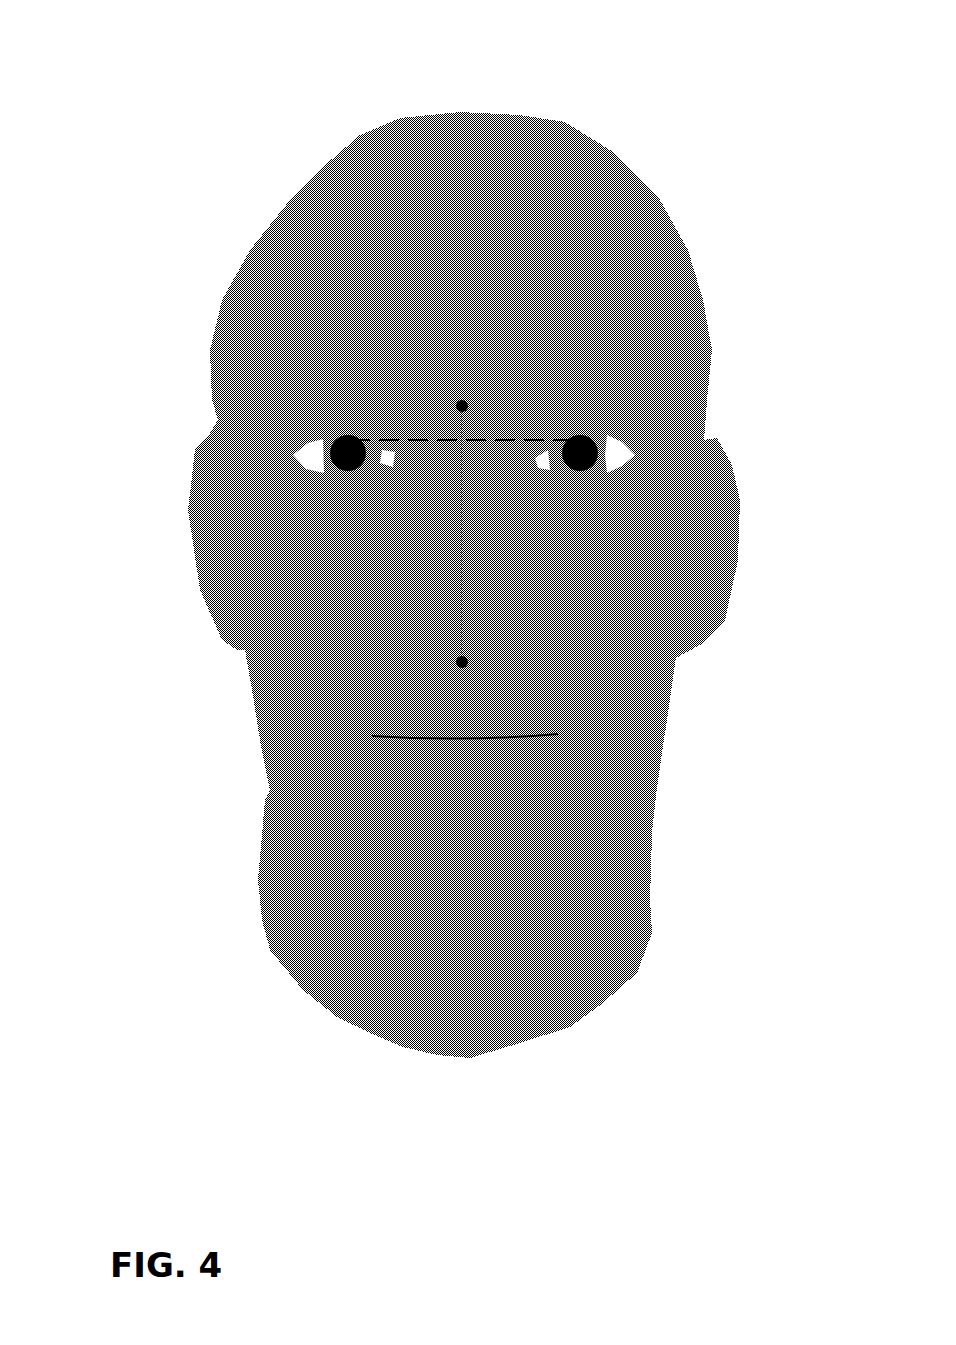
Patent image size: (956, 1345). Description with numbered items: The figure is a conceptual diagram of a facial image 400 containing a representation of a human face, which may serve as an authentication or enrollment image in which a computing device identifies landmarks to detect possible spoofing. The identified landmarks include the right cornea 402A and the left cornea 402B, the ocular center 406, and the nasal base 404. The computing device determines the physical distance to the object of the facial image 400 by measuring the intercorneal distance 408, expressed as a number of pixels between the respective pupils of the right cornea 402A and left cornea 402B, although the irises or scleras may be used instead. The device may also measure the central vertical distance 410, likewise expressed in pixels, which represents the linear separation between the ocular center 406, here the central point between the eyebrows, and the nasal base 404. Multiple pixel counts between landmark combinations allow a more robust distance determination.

The facial image 400 is at (125, 58).
The right cornea 402A is at (350, 440).
The left cornea 402B is at (587, 442).
The nasal base 404 is at (465, 737).
The ocular center 406 is at (462, 405).
The intercorneal distance 408 is at (490, 440).
The central vertical distance 410 is at (463, 572).